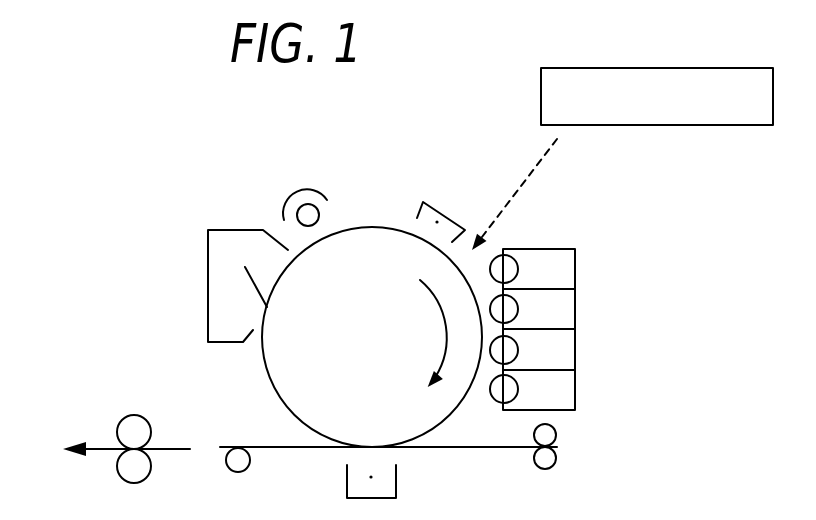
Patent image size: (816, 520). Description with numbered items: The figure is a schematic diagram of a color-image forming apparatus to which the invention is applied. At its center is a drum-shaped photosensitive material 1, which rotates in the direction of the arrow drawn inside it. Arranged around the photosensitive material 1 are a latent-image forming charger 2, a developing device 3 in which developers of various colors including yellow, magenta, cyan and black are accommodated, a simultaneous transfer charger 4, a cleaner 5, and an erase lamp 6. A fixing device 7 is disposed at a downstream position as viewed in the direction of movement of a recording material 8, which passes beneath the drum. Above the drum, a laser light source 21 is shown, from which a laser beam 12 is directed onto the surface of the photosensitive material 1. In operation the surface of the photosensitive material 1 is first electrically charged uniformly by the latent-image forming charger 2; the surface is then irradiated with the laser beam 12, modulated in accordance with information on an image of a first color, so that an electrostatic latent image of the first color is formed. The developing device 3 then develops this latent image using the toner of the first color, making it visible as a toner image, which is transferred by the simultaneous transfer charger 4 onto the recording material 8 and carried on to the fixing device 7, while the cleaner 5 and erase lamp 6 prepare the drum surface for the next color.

The photosensitive material 1 is at (360, 240).
The latent-image forming charger 2 is at (437, 212).
The developing device 3 is at (575, 388).
The simultaneous transfer charger 4 is at (396, 485).
The cleaner 5 is at (207, 267).
The erase lamp 6 is at (288, 217).
The fixing device 7 is at (126, 416).
The recording material 8 is at (250, 447).
The laser beam 12 is at (541, 160).
The laser light source 21 is at (678, 127).